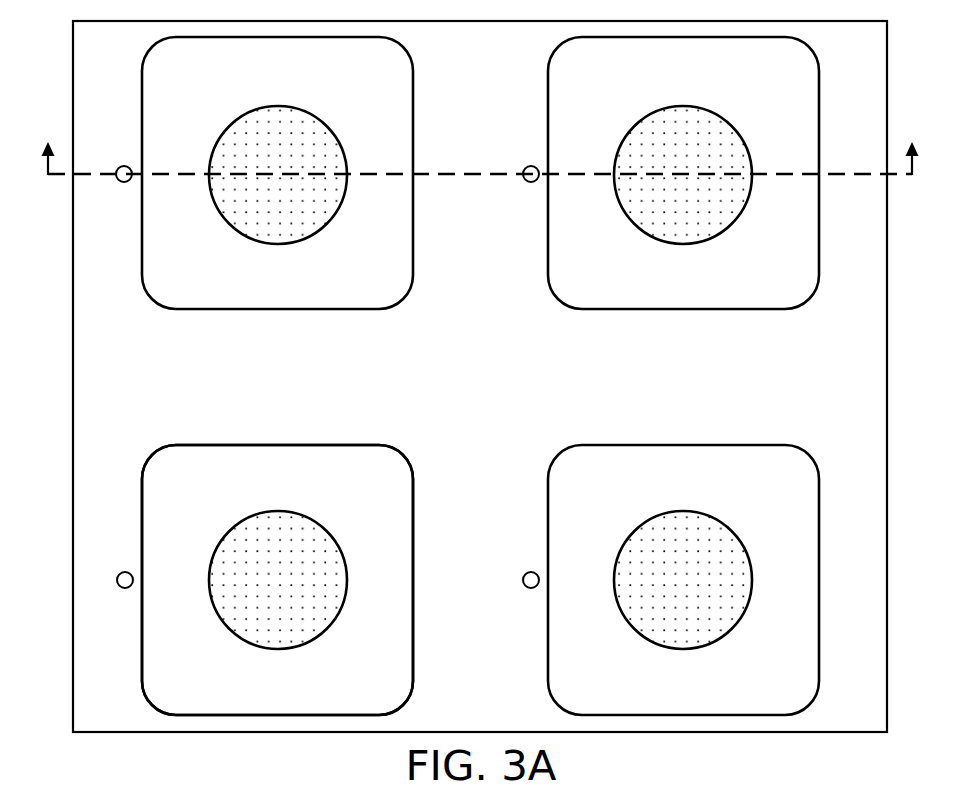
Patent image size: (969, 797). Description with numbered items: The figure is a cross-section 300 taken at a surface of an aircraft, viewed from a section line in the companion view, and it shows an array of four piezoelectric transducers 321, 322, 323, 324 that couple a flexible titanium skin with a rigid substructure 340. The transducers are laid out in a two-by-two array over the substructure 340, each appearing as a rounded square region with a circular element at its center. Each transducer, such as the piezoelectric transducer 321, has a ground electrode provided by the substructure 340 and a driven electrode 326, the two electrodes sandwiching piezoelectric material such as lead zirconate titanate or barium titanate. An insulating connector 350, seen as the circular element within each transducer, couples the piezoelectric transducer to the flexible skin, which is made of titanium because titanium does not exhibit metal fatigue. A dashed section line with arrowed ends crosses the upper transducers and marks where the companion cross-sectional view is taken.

The cross-section 300 is at (475, 375).
The piezoelectric transducer 321 is at (432, 309).
The piezoelectric transducer 322 is at (536, 310).
The piezoelectric transducer 323 is at (433, 443).
The piezoelectric transducer 324 is at (536, 443).
The driven electrode 326 is at (293, 488).
The rigid substructure 340 is at (92, 388).
The insulating connector 350 is at (293, 592).